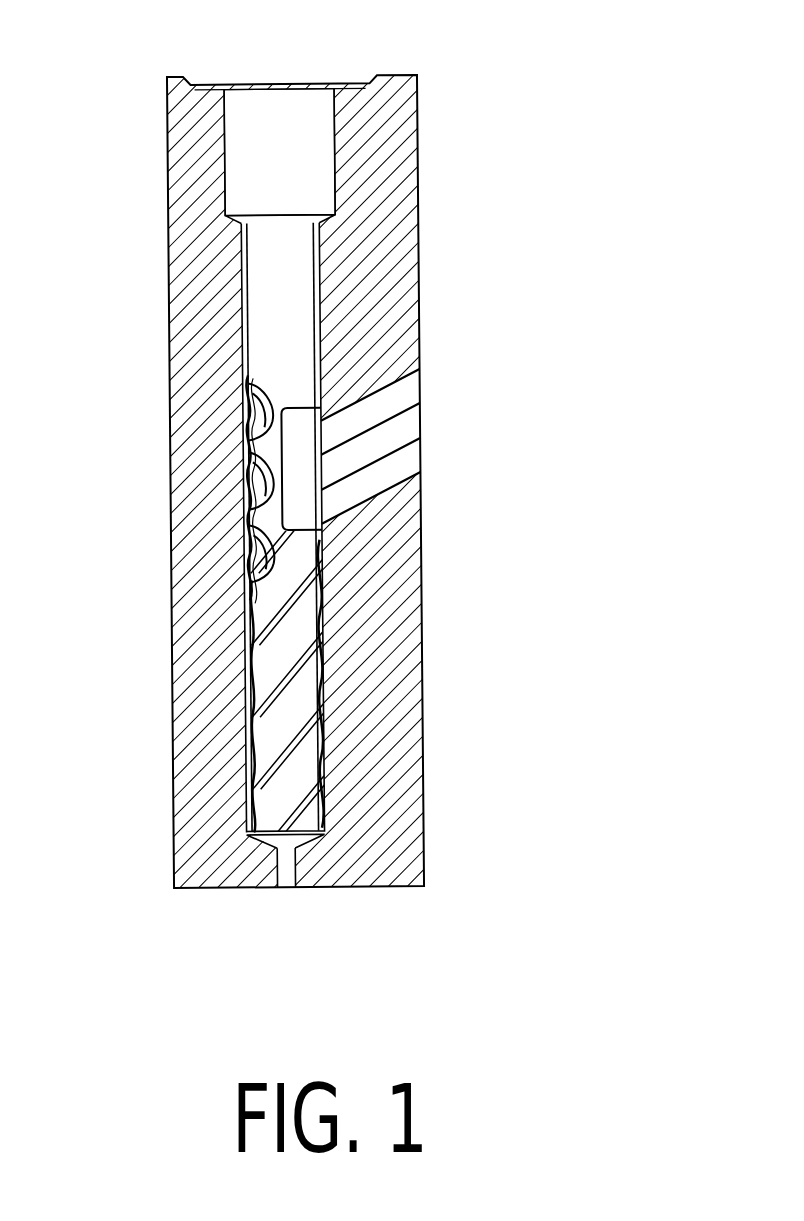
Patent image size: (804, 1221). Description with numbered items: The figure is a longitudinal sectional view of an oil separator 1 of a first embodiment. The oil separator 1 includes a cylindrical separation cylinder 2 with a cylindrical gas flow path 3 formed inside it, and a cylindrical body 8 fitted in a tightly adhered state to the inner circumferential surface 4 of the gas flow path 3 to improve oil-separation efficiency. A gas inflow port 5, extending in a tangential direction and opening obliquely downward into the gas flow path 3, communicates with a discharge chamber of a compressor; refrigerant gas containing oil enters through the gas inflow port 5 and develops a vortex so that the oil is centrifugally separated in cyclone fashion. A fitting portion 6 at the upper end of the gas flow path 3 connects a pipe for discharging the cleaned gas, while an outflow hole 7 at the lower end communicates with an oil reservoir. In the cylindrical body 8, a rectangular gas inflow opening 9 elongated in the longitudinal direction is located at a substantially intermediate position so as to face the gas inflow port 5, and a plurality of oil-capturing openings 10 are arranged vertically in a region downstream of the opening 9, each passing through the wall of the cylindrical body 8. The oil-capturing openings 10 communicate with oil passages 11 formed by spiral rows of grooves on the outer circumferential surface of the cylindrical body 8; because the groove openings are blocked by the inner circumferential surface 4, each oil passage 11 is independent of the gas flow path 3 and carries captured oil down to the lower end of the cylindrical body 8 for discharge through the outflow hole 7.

The oil separator 1 is at (484, 84).
The separation cylinder 2 is at (200, 278).
The cylindrical gas flow path 3 is at (268, 343).
The inner circumferential surface 4 is at (316, 310).
The gas inflow port 5 is at (402, 393).
The fitting portion 6 is at (290, 88).
The outflow hole 7 is at (288, 876).
The cylindrical body 8 is at (262, 614).
The gas inflow opening 9 is at (308, 502).
The oil-capturing opening 10 is at (270, 460).
The oil passage 11 is at (250, 680).